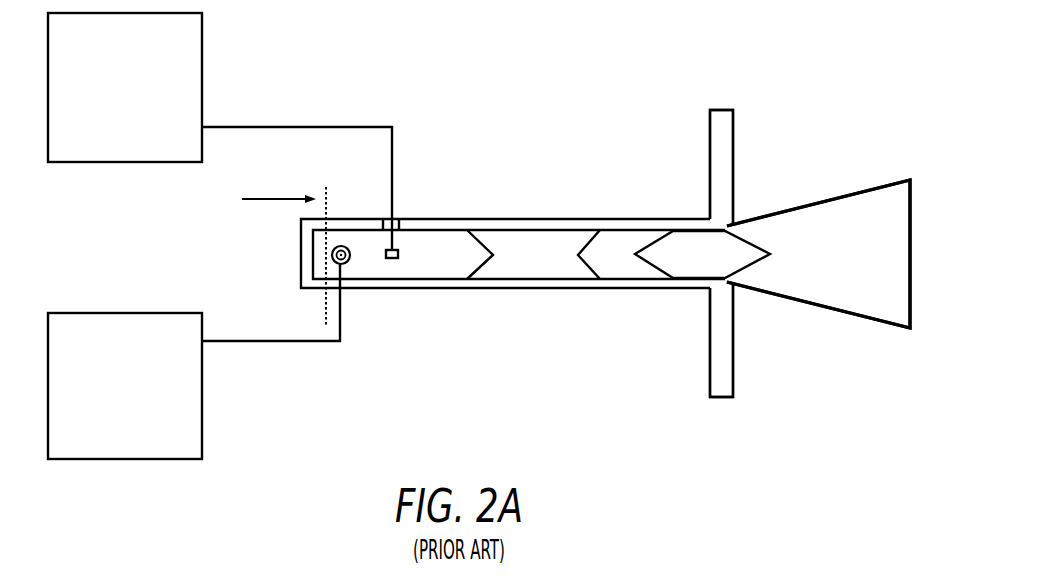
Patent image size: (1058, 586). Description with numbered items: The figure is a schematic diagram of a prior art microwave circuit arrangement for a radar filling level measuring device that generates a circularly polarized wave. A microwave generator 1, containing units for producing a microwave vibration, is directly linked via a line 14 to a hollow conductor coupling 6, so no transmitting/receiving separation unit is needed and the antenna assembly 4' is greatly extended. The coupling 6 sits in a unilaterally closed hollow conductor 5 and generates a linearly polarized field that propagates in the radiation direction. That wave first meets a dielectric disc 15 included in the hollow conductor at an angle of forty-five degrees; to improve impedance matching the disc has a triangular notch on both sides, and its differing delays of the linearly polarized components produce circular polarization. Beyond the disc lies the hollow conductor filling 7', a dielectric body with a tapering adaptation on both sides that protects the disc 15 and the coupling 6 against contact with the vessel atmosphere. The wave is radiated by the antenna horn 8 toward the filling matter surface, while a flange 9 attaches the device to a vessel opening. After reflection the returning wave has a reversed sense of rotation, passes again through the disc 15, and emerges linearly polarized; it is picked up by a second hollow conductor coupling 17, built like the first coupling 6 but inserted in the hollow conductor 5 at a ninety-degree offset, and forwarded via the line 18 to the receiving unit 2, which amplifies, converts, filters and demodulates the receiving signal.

The microwave generator 1 is at (203, 45).
The receiving unit 2 is at (203, 415).
The antenna assembly 4' is at (810, 249).
The hollow conductor 5 is at (452, 287).
The hollow conductor coupling 6 is at (405, 213).
The hollow conductor filling 7' is at (702, 288).
The antenna horn 8 is at (859, 314).
The flange 9 is at (727, 348).
The line 14 is at (297, 125).
The dielectric disc 15 is at (542, 267).
The second hollow conductor coupling 17 is at (353, 263).
The line 18 is at (270, 342).